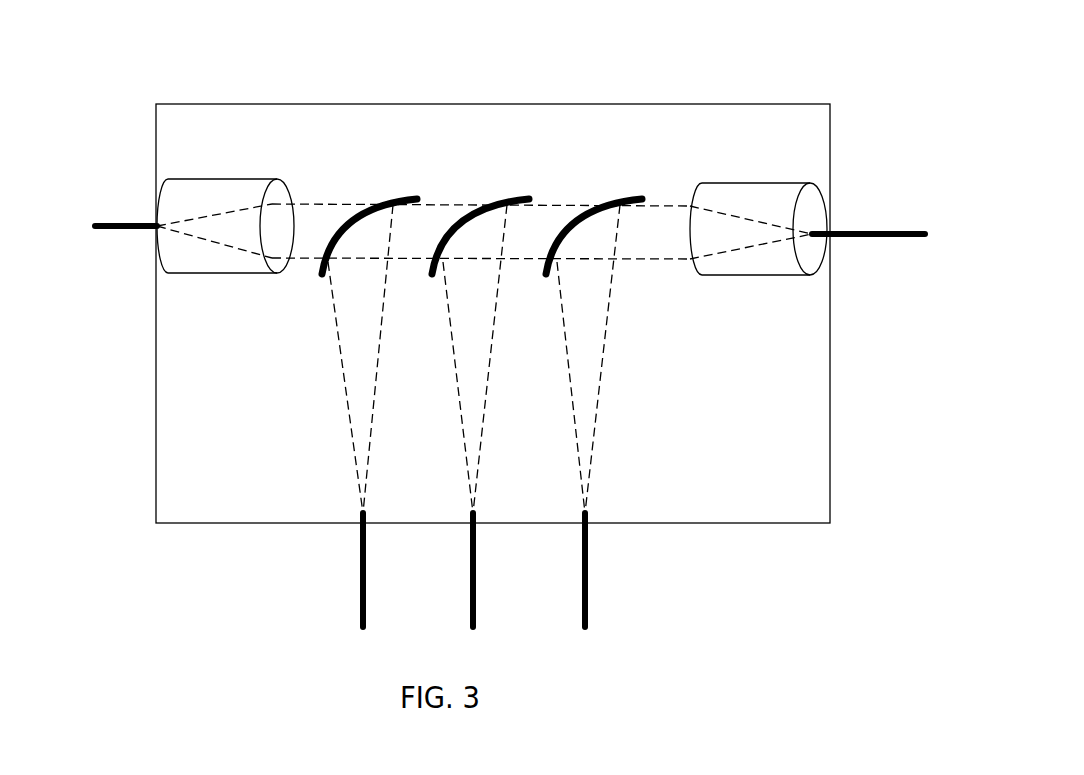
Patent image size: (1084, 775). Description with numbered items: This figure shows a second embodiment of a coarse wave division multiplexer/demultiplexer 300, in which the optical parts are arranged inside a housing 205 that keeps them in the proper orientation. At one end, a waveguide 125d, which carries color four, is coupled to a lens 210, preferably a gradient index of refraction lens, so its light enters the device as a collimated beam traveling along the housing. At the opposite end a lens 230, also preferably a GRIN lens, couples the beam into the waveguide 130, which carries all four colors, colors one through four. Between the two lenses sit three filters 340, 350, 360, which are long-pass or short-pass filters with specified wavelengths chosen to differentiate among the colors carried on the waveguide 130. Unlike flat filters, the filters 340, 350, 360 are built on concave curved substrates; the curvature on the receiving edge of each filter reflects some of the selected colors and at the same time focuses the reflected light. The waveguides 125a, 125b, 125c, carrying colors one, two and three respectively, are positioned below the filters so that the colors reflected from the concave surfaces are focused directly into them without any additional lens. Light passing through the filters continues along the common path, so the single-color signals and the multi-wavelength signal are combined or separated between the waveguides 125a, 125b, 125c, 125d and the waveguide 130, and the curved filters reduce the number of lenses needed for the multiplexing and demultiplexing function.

The coarse wave division multiplexer/demultiplexer 300 is at (417, 73).
The housing 205 is at (209, 120).
The lens 210 is at (200, 172).
The lens 230 is at (770, 175).
The filter 340 is at (622, 200).
The filter 350 is at (518, 195).
The filter 360 is at (402, 195).
The waveguide 125a is at (367, 580).
The waveguide 125b is at (477, 580).
The waveguide 125c is at (593, 578).
The waveguide 125d is at (113, 230).
The waveguide 130 is at (843, 230).